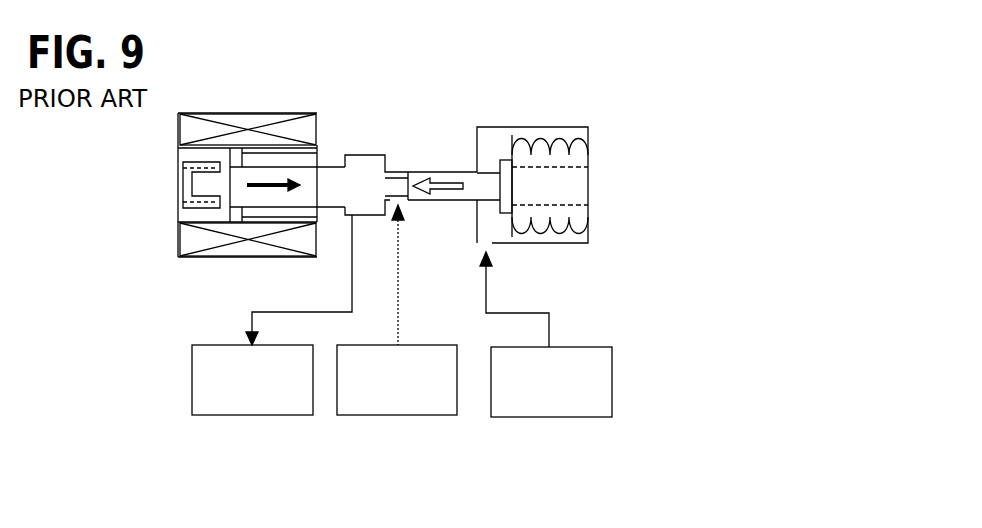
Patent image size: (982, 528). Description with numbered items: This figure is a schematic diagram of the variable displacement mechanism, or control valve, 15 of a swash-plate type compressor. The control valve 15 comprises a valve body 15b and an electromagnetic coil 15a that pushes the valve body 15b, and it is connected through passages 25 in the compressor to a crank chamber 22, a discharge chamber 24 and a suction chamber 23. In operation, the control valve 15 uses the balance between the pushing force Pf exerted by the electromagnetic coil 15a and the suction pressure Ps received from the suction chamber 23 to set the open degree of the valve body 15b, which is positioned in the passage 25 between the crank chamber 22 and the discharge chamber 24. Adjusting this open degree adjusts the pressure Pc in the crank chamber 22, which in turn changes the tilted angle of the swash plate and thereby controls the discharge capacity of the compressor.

The variable displacement mechanism 15 is at (430, 134).
The electromagnetic coil 15a is at (256, 116).
The valve body 15b is at (364, 180).
The passages 25 is at (352, 283).
The crank chamber 22 is at (280, 416).
The discharge chamber 24 is at (428, 416).
The suction chamber 23 is at (582, 418).